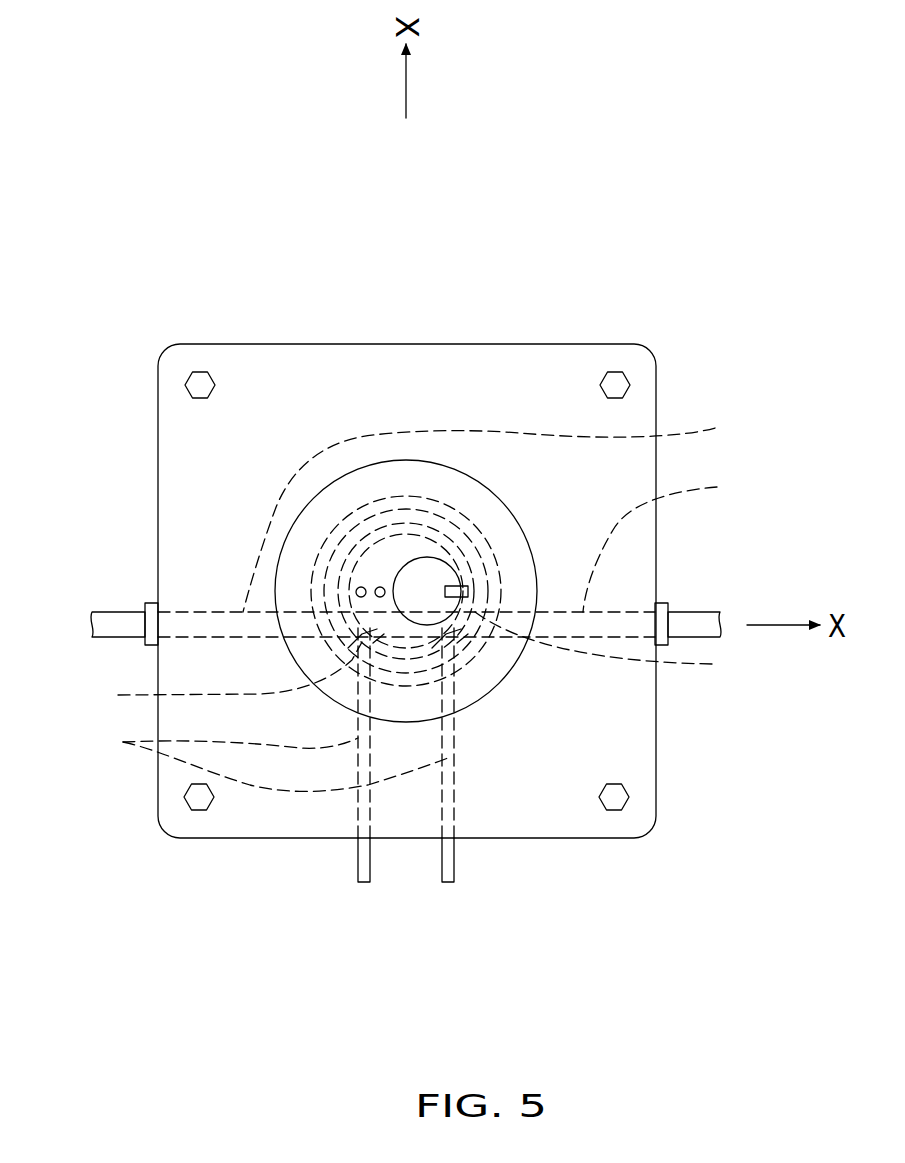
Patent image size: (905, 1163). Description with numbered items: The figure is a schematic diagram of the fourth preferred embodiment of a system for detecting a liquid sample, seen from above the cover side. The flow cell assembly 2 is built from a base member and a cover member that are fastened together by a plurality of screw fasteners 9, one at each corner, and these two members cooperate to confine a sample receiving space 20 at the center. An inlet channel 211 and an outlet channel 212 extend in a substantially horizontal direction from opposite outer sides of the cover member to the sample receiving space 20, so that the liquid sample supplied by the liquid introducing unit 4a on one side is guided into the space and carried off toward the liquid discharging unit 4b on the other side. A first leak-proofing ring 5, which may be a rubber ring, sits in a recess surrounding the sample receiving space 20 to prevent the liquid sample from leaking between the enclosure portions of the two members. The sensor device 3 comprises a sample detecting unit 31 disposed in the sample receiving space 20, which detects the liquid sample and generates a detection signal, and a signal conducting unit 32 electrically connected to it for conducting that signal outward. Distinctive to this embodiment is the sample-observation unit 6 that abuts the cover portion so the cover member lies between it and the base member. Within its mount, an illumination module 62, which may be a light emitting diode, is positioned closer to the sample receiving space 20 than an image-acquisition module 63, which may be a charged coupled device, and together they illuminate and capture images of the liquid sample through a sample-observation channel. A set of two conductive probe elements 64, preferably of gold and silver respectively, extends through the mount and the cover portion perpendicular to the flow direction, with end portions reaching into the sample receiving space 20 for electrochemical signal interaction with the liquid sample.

The flow cell assembly 2 is at (408, 342).
The screw fasteners 9 is at (199, 372).
The inlet channel 211 is at (505, 511).
The outlet channel 212 is at (675, 539).
The liquid introducing unit 4a is at (107, 609).
The liquid discharging unit 4b is at (712, 608).
The sample receiving space 20 is at (360, 630).
The sample-observation unit 6 is at (497, 692).
The sensor device 3 is at (80, 693).
The sample detecting unit 31 is at (225, 678).
The signal conducting unit 32 is at (268, 755).
The first leak-proofing ring 5 is at (453, 632).
The illumination module 62 is at (611, 647).
The image-acquisition module 63 is at (432, 602).
The conductive probe elements 64 is at (365, 596).